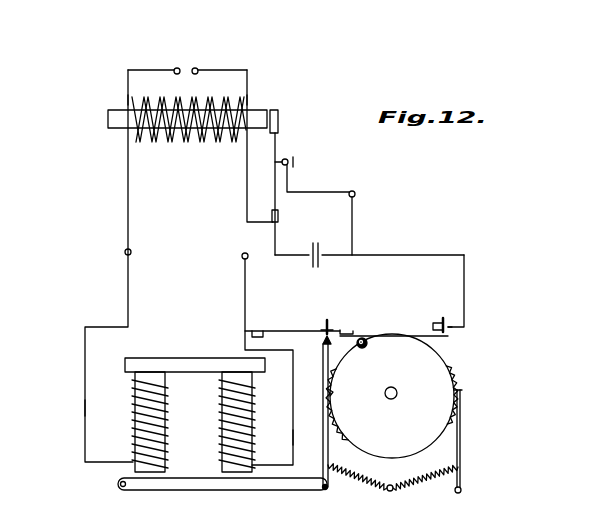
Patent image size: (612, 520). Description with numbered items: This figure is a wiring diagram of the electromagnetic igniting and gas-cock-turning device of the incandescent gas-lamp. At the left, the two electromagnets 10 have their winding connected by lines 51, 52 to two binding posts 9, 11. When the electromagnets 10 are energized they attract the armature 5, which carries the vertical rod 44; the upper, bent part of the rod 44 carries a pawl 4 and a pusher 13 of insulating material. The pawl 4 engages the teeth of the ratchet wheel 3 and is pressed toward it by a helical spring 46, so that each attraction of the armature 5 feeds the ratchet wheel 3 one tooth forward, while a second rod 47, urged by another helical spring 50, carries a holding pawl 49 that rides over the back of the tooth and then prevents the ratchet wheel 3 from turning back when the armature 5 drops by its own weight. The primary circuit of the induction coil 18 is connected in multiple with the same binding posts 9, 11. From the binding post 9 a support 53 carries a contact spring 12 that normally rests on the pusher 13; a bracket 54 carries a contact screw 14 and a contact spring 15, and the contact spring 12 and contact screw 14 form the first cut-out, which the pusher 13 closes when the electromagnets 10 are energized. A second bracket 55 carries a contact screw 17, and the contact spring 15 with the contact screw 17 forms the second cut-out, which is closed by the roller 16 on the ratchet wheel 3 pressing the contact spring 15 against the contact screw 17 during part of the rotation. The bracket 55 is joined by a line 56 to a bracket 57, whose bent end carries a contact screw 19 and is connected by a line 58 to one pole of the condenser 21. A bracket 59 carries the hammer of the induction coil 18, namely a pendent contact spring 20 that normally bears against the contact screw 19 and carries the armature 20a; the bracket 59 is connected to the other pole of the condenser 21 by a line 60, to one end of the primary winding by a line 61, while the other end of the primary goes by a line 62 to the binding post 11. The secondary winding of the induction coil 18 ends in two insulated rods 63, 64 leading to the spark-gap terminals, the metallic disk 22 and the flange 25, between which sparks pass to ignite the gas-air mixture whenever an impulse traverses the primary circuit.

The ratchet wheel 3 is at (438, 368).
The pawl 4 is at (324, 397).
The armature 5 is at (188, 487).
The binding post 9 is at (248, 256).
The electromagnets 10 is at (166, 357).
The binding post 11 is at (131, 252).
The contact spring 12 is at (288, 331).
The pusher 13 is at (324, 341).
The contact screw 14 is at (328, 320).
The contact spring 15 is at (398, 335).
The roller 16 is at (367, 346).
The contact screw 17 is at (443, 318).
The induction coil 18 is at (188, 143).
The contact screw 19 is at (294, 162).
The pendent contact spring 20 is at (275, 199).
The armature 20a is at (279, 119).
The condenser 21 is at (316, 243).
The metallic disk 22 is at (178, 68).
The flange 25 is at (198, 69).
The vertical rod 44 is at (329, 449).
The helical spring 46 is at (363, 480).
The rod 47 is at (461, 447).
The pawl 49 is at (462, 392).
The helical spring 50 is at (431, 479).
The line 51 is at (293, 437).
The line 52 is at (85, 408).
The support 53 is at (258, 332).
The bracket 54 is at (350, 331).
The bracket 55 is at (449, 328).
The line 56 is at (432, 256).
The bracket 57 is at (318, 192).
The line 58 is at (330, 256).
The bracket 59 is at (279, 217).
The line 60 is at (287, 256).
The line 61 is at (247, 198).
The line 62 is at (129, 185).
The vertical rod 63 is at (128, 98).
The vertical rod 64 is at (247, 99).